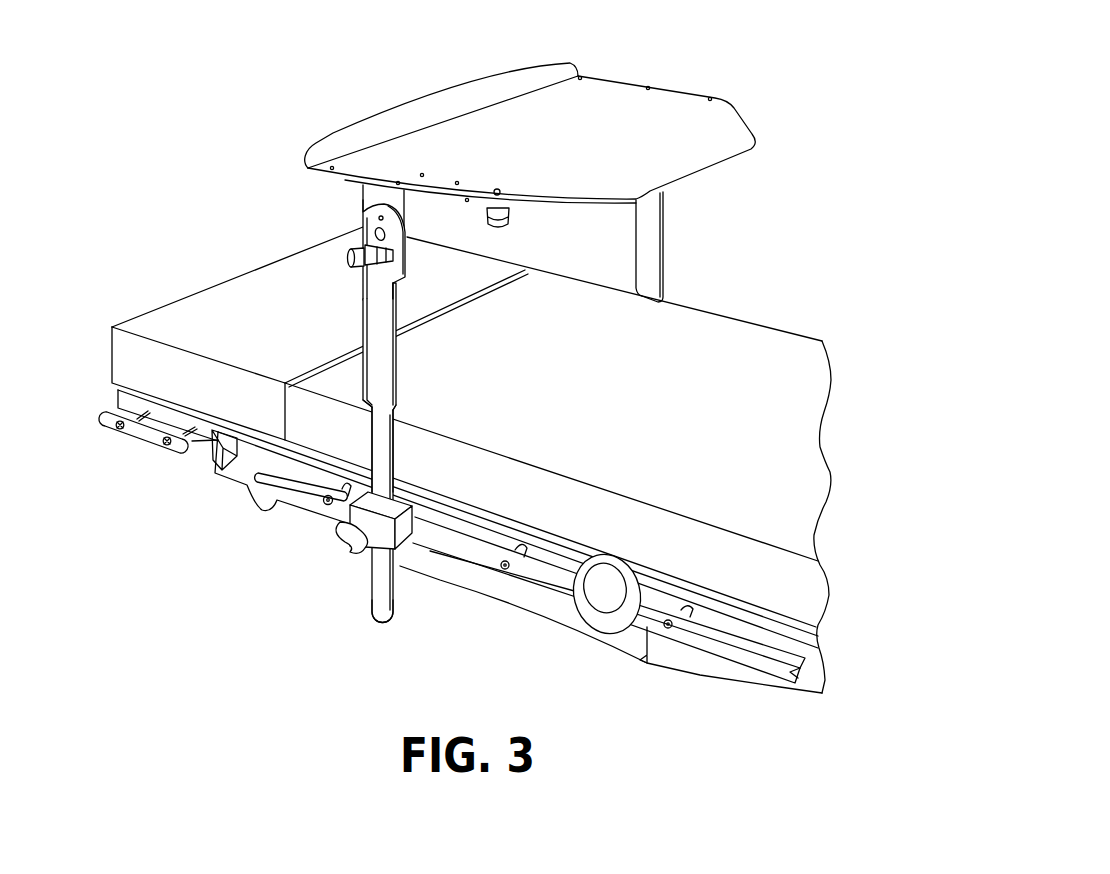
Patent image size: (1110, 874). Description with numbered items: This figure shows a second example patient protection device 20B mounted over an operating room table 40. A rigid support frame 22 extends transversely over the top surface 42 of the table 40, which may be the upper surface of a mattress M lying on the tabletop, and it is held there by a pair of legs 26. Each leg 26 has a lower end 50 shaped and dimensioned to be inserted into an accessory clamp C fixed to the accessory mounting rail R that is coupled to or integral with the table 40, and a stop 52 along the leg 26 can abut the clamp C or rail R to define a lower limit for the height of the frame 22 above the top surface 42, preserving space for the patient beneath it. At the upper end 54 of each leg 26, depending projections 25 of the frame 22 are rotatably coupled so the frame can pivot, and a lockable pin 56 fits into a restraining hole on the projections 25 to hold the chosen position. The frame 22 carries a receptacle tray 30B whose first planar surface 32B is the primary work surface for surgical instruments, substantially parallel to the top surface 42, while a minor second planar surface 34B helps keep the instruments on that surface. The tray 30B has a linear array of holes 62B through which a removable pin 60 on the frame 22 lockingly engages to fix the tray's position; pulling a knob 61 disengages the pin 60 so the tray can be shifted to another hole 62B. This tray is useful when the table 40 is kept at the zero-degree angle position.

The patient protection device 20B is at (531, 132).
The receptacle tray 30B is at (531, 163).
The first planar surface 32B is at (604, 152).
The second planar surface 34B is at (438, 108).
The holes 62B is at (383, 167).
The removable pin 60 is at (500, 190).
The knob 61 is at (500, 227).
The rigid support frame 22 is at (362, 203).
The depending projections 25 is at (400, 205).
The legs 26 is at (658, 250).
The stop 52 is at (405, 410).
The lower end 50 is at (373, 603).
The upper end 54 is at (362, 230).
The lockable pin 56 is at (351, 262).
The mattress M is at (180, 305).
The top surface 42 is at (671, 412).
The accessory clamps C is at (400, 537).
The accessory mounting rail R is at (537, 582).
The operating room table 40 is at (570, 615).